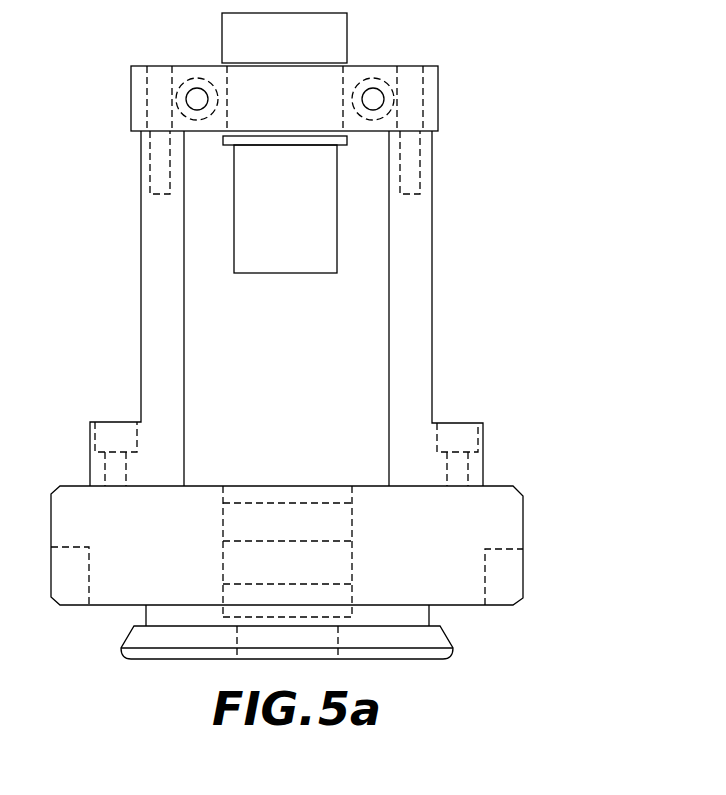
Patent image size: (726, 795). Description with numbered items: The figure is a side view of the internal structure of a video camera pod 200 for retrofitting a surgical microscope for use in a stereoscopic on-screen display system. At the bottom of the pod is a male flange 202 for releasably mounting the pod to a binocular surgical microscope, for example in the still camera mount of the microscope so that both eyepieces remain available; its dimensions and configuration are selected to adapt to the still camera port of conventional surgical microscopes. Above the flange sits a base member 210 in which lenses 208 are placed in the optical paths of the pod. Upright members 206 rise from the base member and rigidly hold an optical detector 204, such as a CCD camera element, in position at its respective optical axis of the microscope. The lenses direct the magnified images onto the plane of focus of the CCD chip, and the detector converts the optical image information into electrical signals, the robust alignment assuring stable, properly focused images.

The video camera pod 200 is at (141, 293).
The male flange 202 is at (452, 638).
The optical detector 204 is at (292, 35).
The upright member 206 is at (417, 329).
The lens 208 is at (237, 597).
The base member 210 is at (472, 525).